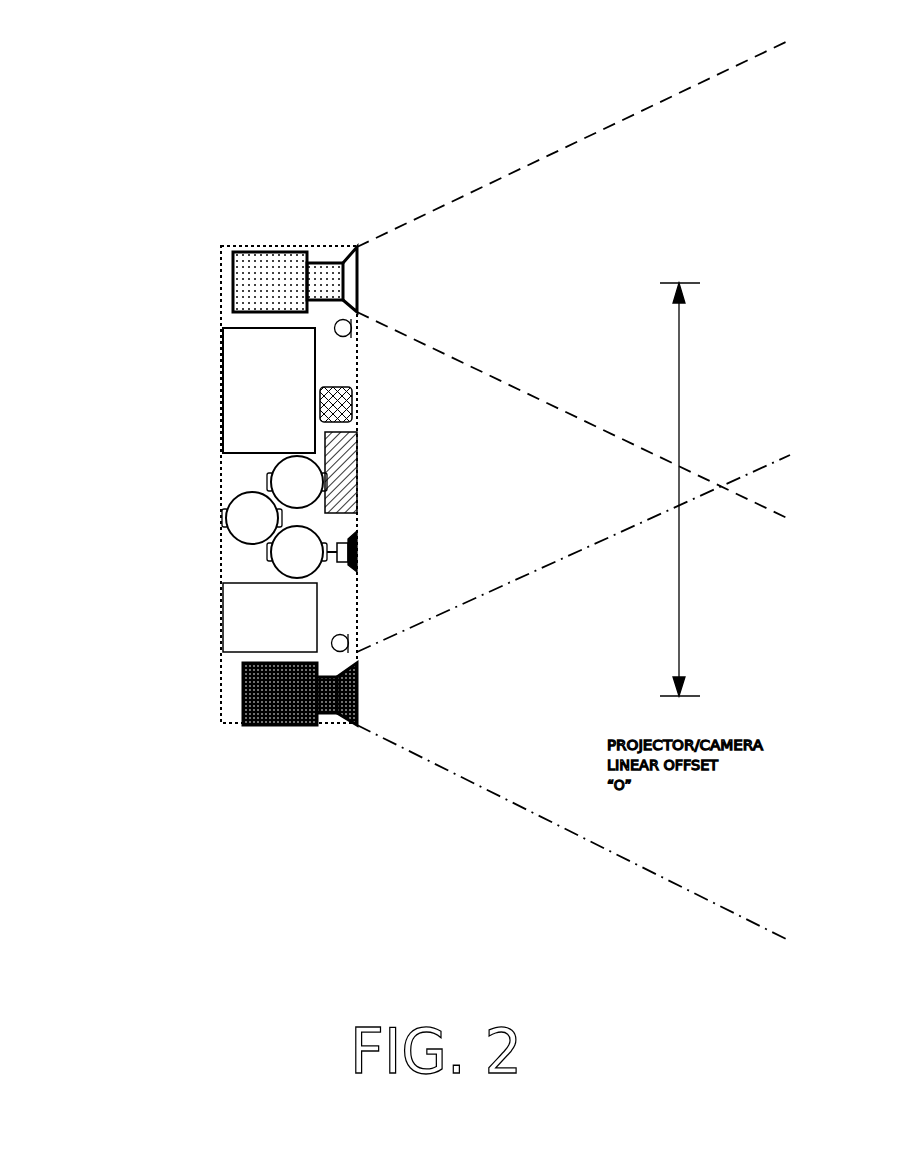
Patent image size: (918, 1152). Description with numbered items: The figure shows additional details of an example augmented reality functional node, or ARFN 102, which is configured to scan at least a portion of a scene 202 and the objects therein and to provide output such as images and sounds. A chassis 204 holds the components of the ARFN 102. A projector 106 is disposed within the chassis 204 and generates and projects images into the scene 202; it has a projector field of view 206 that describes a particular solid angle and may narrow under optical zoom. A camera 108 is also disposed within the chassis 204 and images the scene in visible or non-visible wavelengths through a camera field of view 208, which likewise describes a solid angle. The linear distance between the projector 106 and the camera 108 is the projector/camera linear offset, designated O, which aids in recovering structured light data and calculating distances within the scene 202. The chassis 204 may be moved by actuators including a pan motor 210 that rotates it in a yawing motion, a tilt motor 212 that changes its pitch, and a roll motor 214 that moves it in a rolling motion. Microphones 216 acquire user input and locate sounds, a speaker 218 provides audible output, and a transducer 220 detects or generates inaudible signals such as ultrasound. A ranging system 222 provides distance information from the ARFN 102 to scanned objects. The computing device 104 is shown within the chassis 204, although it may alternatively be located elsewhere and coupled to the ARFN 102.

The augmented reality functional node 102 is at (357, 423).
The computing device 104 is at (187, 390).
The projector 106 is at (210, 270).
The camera 108 is at (230, 728).
The scene 202 is at (821, 491).
The chassis 204 is at (302, 443).
The projector field of view 206 is at (548, 264).
The camera field of view 208 is at (529, 698).
The pan motor 210 is at (194, 482).
The tilt motor 212 is at (171, 531).
The roll motor 214 is at (189, 582).
The microphone 216 is at (498, 440).
The speaker 218 is at (415, 536).
The transducer 220 is at (446, 356).
The ranging system 222 is at (415, 460).